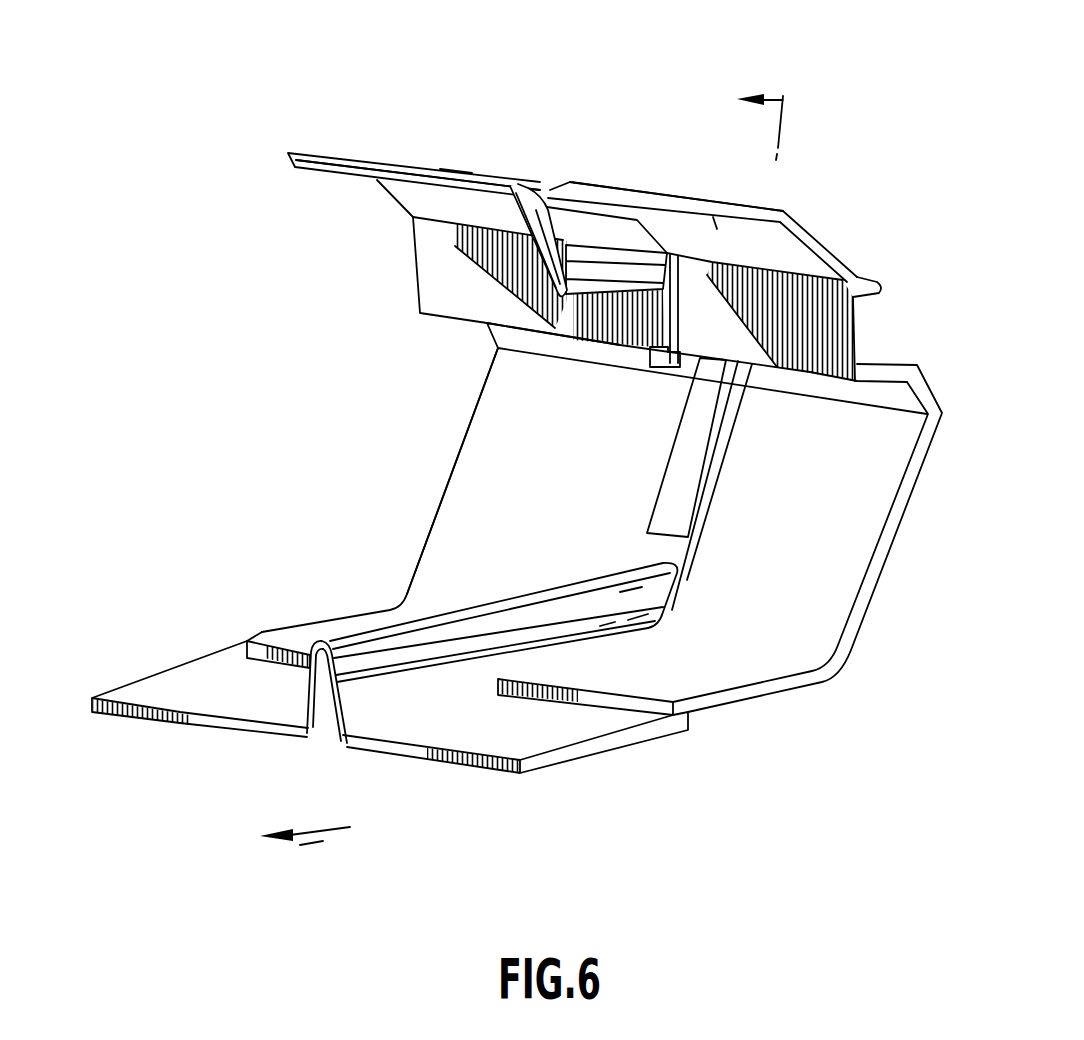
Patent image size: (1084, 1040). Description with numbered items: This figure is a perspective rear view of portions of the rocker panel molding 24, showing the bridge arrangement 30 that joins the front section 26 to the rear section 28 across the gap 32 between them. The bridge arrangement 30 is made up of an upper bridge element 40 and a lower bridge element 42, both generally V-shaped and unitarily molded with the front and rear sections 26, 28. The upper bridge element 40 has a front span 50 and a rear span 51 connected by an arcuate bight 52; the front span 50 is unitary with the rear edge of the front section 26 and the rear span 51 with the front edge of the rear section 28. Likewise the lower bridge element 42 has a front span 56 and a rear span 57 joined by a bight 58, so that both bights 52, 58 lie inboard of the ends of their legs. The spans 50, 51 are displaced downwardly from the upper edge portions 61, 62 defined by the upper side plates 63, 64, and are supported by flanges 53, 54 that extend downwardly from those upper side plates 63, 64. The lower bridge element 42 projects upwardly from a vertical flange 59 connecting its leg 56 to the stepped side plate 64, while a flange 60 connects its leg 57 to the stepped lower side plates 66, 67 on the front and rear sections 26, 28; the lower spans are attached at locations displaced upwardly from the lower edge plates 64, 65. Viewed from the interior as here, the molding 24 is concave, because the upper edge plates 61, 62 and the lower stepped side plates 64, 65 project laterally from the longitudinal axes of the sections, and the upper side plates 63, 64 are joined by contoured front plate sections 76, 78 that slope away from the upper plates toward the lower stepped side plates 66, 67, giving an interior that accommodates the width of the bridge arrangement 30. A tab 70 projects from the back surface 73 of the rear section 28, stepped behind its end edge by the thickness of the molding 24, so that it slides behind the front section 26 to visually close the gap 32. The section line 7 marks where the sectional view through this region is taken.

The section line 7- 7 is at (535, 476).
The rocker panel molding 24 is at (601, 153).
The front section 26 is at (818, 212).
The rear section 28 is at (514, 148).
The bridge arrangement 30 is at (571, 336).
The gap 32 is at (665, 340).
The upper bridge element 40 is at (618, 322).
The lower bridge element 42 is at (504, 580).
The front span 50 is at (627, 265).
The rear span 51 is at (541, 273).
The arcuate bight 52 is at (573, 311).
The flange 53 is at (528, 197).
The flange 54 is at (527, 230).
The front span 56 is at (405, 652).
The rear span 57 is at (298, 671).
The bight 58 is at (364, 630).
The vertical flange 59 is at (333, 720).
The flange 60 is at (320, 710).
The upper edge portion 61 is at (683, 185).
The upper edge portion 62 is at (421, 150).
The upper side plate 63 is at (716, 203).
The upper side plate 64 is at (365, 157).
The lower edge plate 65 is at (217, 731).
The stepped lower side plate 66 is at (670, 682).
The stepped lower side plate 67 is at (296, 632).
The tab 70 is at (679, 499).
The back surface 73 is at (570, 547).
The contoured front plate section 76 is at (863, 328).
The contoured front plate section 78 is at (473, 200).